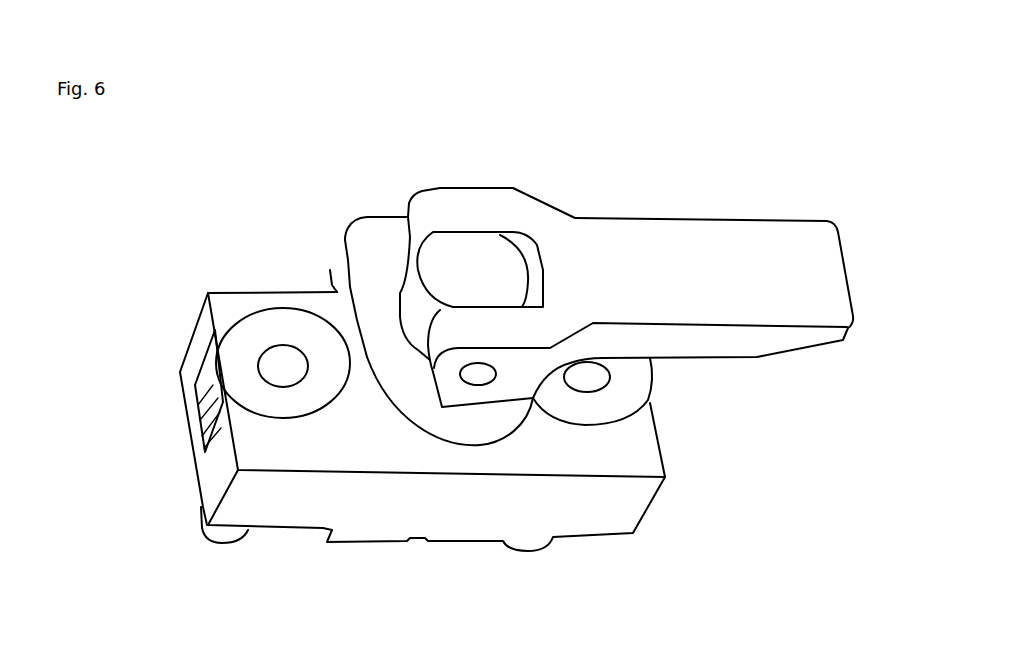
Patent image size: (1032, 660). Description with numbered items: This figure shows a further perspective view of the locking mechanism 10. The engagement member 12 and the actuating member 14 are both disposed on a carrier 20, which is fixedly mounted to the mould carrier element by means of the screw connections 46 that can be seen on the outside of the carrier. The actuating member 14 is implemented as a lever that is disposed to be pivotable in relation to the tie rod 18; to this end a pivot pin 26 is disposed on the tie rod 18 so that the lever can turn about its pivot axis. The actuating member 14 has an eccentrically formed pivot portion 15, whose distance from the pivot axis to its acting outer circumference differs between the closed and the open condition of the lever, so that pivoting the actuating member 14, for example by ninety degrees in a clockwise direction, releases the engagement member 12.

The locking mechanism 10 is at (486, 163).
The engagement member 12 is at (372, 242).
The actuating member 14 is at (685, 277).
The pivot portion 15 is at (445, 350).
The tie rod 18 is at (487, 258).
The carrier 20 is at (633, 462).
The pivot pin 26 is at (478, 377).
The screw connections 46 is at (627, 397).